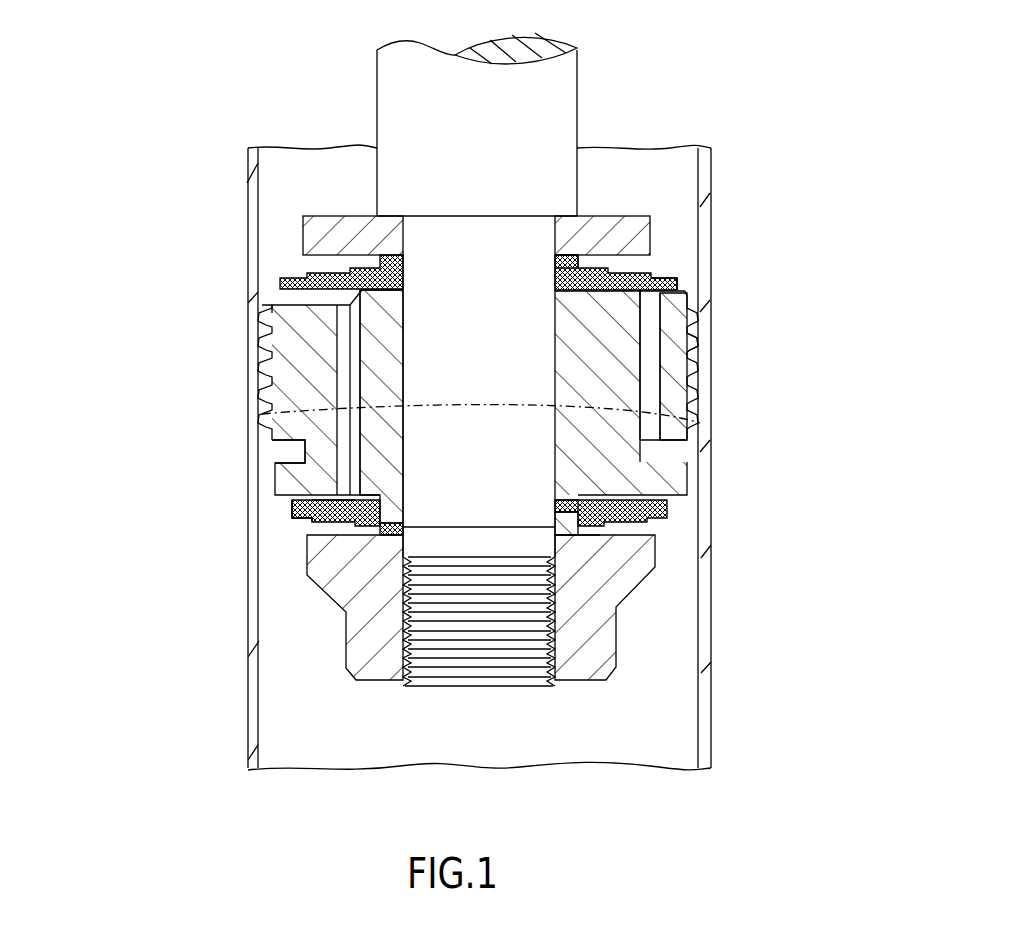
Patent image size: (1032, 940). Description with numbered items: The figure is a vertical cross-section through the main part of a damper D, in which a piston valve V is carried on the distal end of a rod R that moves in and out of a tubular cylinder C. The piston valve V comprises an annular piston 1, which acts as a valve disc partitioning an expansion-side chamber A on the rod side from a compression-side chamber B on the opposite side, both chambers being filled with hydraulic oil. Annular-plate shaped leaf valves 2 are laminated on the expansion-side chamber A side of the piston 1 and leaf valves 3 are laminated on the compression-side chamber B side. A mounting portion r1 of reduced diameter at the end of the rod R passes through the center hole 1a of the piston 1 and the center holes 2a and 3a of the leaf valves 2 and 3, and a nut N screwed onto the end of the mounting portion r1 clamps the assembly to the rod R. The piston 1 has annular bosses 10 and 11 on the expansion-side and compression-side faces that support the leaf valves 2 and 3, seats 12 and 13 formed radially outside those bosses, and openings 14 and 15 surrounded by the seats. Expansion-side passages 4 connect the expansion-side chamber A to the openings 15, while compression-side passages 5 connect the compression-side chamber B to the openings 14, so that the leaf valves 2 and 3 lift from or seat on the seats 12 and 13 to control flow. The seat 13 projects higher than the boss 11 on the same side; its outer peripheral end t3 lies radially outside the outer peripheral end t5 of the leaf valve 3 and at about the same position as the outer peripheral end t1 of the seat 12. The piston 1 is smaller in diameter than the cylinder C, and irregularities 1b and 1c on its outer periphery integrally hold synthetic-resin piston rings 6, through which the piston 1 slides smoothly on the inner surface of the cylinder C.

The piston 1 is at (692, 481).
The center hole 1a is at (406, 393).
The irregularities 1b is at (260, 417).
The irregularities 1c is at (258, 350).
The leaf valve 2 is at (279, 268).
The center hole 2a is at (552, 282).
The leaf valve 3 is at (676, 521).
The center hole 3a is at (540, 508).
The expansion-side passage 4 is at (345, 363).
The compression-side passage 5 is at (650, 382).
The piston ring 6 is at (697, 343).
The boss 10 is at (388, 253).
The boss 11 is at (567, 535).
The seat 12 is at (673, 288).
The seat 13 is at (298, 512).
The opening 14 is at (651, 300).
The opening 15 is at (320, 505).
The outer peripheral end of seat 12 t1 is at (676, 284).
The outer peripheral end of seat 13 t3 is at (293, 506).
The outer peripheral end of leaf valve 3 t5 is at (290, 520).
The mounting portion r1 is at (700, 423).
The piston valve V is at (264, 473).
The rod R is at (375, 92).
The nut N is at (385, 683).
The expansion-side chamber A is at (623, 167).
The compression-side chamber B is at (651, 745).
The cylinder C is at (247, 742).
The damper D is at (736, 134).